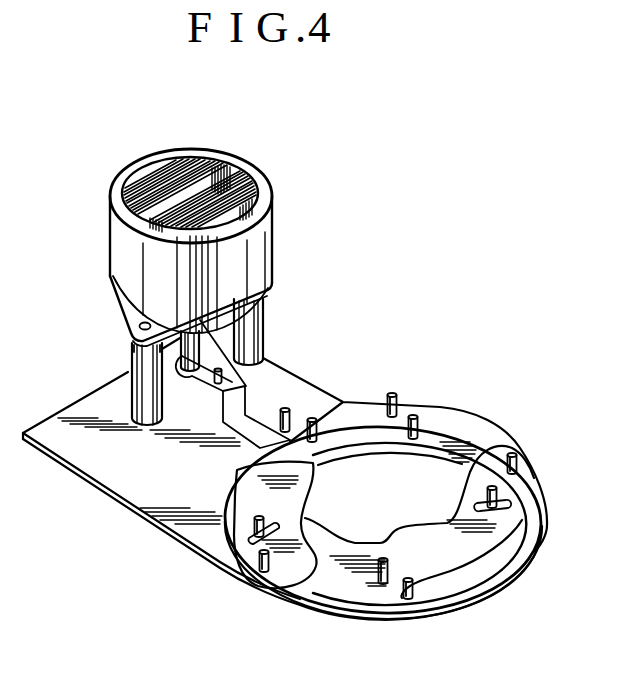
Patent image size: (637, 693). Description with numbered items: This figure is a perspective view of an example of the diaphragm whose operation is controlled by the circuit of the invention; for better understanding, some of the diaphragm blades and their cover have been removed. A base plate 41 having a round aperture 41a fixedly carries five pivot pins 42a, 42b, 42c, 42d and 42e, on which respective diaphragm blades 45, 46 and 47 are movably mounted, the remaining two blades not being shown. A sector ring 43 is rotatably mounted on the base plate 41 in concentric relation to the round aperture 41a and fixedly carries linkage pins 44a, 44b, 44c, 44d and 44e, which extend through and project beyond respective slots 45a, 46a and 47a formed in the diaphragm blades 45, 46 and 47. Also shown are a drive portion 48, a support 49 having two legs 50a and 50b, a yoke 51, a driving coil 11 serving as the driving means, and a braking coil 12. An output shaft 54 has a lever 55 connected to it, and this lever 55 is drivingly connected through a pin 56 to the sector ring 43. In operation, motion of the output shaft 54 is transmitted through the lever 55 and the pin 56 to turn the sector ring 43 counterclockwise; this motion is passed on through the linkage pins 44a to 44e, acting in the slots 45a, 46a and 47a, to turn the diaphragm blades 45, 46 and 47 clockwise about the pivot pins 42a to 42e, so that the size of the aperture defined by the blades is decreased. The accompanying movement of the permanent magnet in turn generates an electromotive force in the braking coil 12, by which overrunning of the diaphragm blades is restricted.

The driving coil 11 is at (208, 165).
The braking coil 12 is at (238, 178).
The base plate 41 is at (287, 378).
The aperture 41a is at (463, 458).
The pivot pin 42a is at (290, 416).
The pivot pin 42b is at (396, 393).
The pivot pin 42c is at (515, 454).
The pivot pin 42d is at (431, 600).
The pivot pin 42e is at (259, 572).
The sector ring 43 is at (433, 482).
The linkage pin 44a is at (314, 426).
The linkage pin 44b is at (414, 423).
The linkage pin 44c is at (497, 490).
The linkage pin 44d is at (390, 590).
The linkage pin 44e is at (252, 526).
The diaphragm blade 45 is at (494, 542).
The slot 45a is at (511, 505).
The diaphragm blade 46 is at (338, 588).
The slot 46a is at (384, 596).
The diaphragm blade 47 is at (288, 578).
The slot 47a is at (253, 548).
The drive portion 48 is at (272, 187).
The support 49 is at (128, 308).
The leg 50a is at (135, 350).
The leg 50b is at (260, 303).
The yoke 51 is at (263, 240).
The output shaft 54 is at (137, 368).
The lever 55 is at (202, 378).
The pin 56 is at (232, 372).